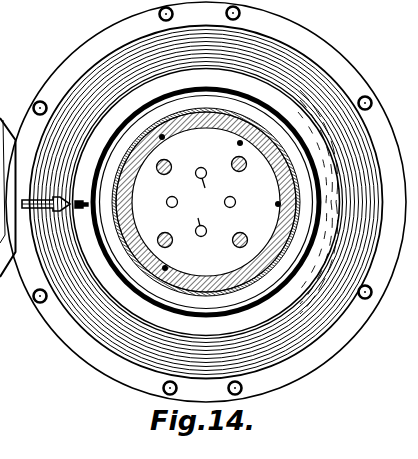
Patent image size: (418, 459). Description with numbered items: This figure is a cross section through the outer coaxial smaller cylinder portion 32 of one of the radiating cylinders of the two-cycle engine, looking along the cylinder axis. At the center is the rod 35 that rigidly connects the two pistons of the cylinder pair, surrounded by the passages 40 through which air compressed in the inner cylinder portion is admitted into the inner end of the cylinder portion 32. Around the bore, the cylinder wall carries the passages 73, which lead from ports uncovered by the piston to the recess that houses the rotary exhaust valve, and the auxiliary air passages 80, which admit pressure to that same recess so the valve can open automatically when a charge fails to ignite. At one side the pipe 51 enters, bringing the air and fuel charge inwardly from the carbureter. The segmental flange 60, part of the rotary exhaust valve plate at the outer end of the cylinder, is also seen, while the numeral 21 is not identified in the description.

The knurled rim of inner ring 21 is at (135, 202).
The outer coaxial smaller cylinder portion 32 is at (286, 200).
The rod 35 is at (172, 167).
The passage 40 is at (178, 202).
The pipe 51 is at (78, 210).
The segmental flange 60 is at (26, 222).
The passage 73 is at (163, 138).
The auxiliary air passage 80 is at (138, 193).